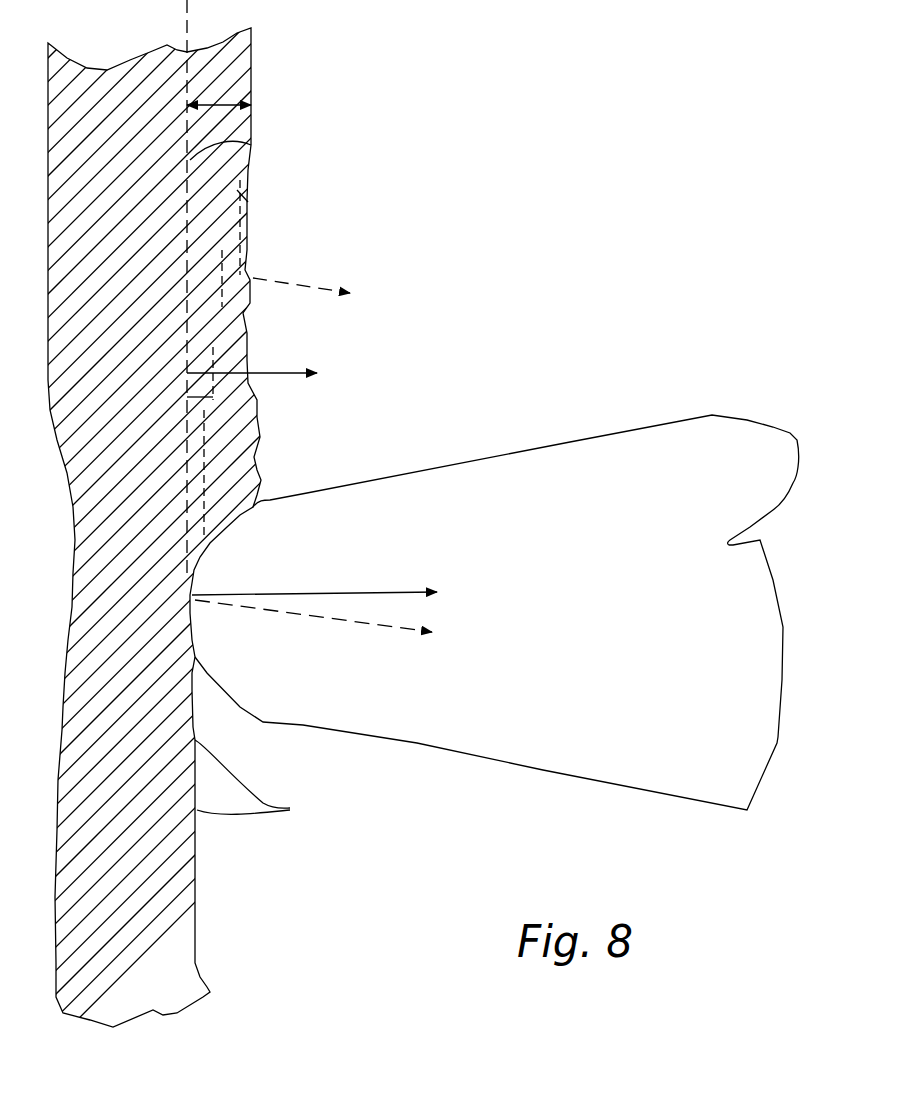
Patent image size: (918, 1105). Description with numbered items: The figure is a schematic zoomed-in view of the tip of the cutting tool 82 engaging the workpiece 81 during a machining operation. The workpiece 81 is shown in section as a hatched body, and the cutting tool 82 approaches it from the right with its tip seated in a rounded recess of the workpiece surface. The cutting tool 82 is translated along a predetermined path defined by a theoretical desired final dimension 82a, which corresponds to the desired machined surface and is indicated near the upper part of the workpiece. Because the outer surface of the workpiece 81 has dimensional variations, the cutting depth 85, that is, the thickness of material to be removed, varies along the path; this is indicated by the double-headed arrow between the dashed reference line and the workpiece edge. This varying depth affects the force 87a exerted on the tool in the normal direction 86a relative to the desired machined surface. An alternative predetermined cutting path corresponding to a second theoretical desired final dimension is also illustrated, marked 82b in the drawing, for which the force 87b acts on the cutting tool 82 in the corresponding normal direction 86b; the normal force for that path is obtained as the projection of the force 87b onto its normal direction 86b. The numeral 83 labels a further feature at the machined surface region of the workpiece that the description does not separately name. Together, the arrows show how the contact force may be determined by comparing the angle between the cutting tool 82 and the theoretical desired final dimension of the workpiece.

The workpiece 81 is at (170, 850).
The cutting tool 82 is at (685, 462).
The theoretical desired final dimension 82a is at (251, 145).
The second surface of insert 82b is at (248, 202).
The wall surface 83 is at (259, 781).
The cutting depth 85 is at (228, 92).
The normal direction 86a is at (276, 374).
The normal direction for second theoretical desired final dimension 86b is at (329, 291).
The force 87a is at (342, 592).
The force 87b is at (343, 627).